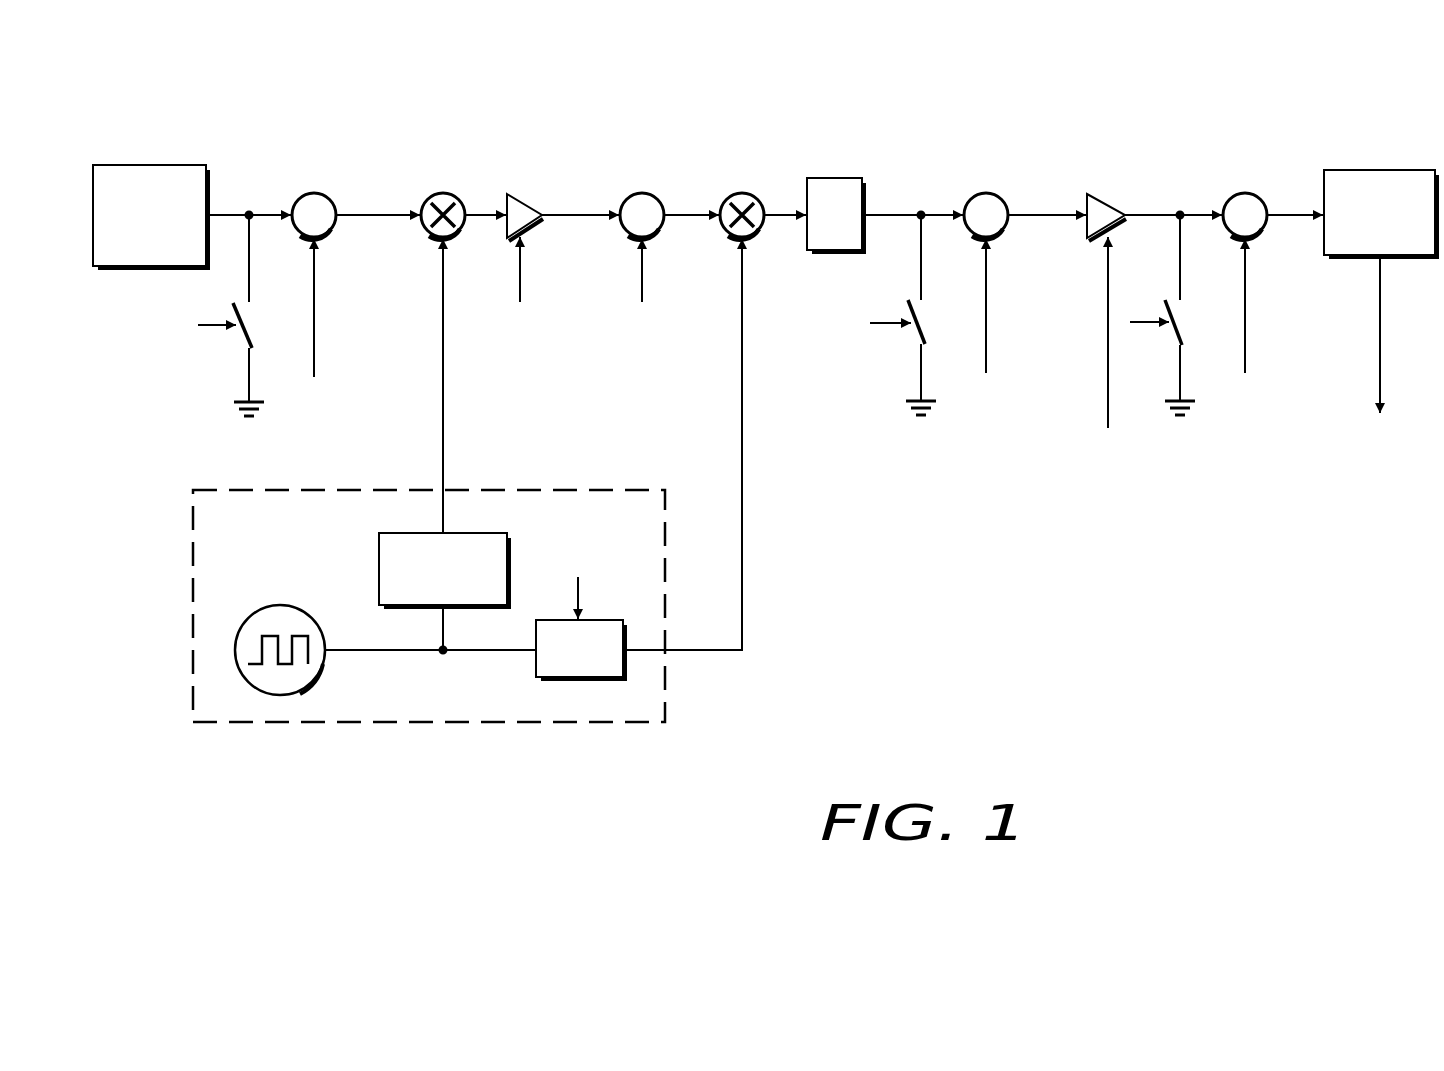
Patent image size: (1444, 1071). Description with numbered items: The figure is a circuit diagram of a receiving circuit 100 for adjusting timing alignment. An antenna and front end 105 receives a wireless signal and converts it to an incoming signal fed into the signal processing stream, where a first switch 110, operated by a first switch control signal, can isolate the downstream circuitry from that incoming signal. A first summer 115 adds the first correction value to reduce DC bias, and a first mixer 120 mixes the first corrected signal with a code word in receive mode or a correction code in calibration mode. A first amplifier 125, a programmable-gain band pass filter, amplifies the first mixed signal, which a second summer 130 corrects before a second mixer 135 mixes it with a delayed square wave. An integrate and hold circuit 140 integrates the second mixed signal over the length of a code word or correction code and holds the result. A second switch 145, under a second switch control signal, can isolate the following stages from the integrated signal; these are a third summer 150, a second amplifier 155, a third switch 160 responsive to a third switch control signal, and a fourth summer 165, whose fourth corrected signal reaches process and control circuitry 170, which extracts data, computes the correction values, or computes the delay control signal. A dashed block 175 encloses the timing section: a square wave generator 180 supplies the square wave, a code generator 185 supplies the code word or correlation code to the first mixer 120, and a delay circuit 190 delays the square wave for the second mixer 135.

The receiving circuit 100 is at (971, 750).
The antenna and front end 105 is at (164, 166).
The first switch 110 is at (250, 331).
The first summer 115 is at (315, 194).
The first mixer 120 is at (448, 195).
The first amplifier 125 is at (527, 205).
The second summer 130 is at (643, 193).
The second mixer 135 is at (742, 193).
The integrate and hold circuit 140 is at (833, 178).
The second switch 145 is at (922, 331).
The third summer 150 is at (987, 193).
The second amplifier 155 is at (1108, 205).
The third switch 160 is at (1182, 331).
The fourth summer 165 is at (1246, 194).
The process and control circuitry 170 is at (1381, 170).
The code and delay section 175 is at (344, 490).
The square wave generator 180 is at (280, 605).
The code generator 185 is at (379, 560).
The delay circuit 190 is at (536, 670).